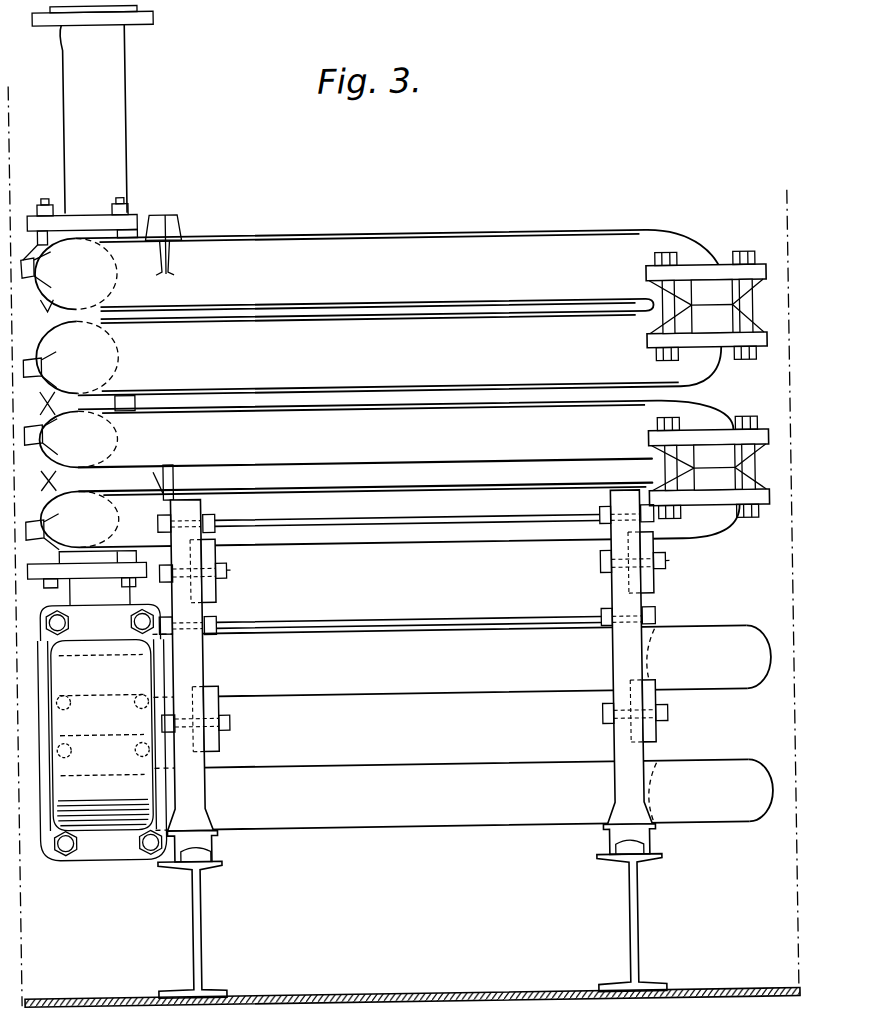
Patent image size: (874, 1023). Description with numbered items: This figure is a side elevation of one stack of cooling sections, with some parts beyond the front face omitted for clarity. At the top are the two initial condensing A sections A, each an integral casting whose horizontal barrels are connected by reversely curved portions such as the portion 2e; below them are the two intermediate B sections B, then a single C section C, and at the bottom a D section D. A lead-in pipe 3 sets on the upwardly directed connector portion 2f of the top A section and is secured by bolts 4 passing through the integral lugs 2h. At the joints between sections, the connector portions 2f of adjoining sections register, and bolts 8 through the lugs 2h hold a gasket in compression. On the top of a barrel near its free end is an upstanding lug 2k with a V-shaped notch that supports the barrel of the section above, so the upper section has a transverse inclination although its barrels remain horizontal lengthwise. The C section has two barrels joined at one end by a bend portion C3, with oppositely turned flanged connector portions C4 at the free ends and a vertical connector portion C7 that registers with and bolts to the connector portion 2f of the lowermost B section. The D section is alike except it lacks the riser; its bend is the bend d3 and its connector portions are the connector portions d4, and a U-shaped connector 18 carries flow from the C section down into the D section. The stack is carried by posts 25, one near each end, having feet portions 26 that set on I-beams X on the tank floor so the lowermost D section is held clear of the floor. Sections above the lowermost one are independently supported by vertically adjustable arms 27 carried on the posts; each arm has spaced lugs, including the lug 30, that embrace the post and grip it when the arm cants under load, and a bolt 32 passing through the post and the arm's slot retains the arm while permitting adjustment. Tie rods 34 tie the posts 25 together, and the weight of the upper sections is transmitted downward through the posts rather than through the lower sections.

The lead-in pipe 3 is at (120, 108).
The bolts 4 is at (48, 199).
The reversely curved portion 2e is at (50, 338).
The connector portion 2f is at (113, 558).
The lugs 2h is at (701, 272).
The bolts 8 is at (661, 312).
The upstanding lug 2k is at (177, 473).
The posts 25 is at (197, 663).
The feet portions 26 is at (219, 846).
The vertically adjustable arms 27 is at (210, 521).
The lug 30 is at (628, 546).
The bolt 32 is at (231, 718).
The tie rod 34 is at (345, 511).
The rail X is at (199, 927).
The A section A is at (380, 312).
The B section B is at (389, 488).
The C section C is at (449, 661).
The D section D is at (452, 794).
The bend portion C3 is at (763, 682).
The bend d3 is at (761, 802).
The flanged connector portion C4 is at (100, 622).
The vertical connector portion C7 is at (100, 592).
The connector portions d4 is at (91, 848).
The U-shaped connector 18 is at (109, 815).